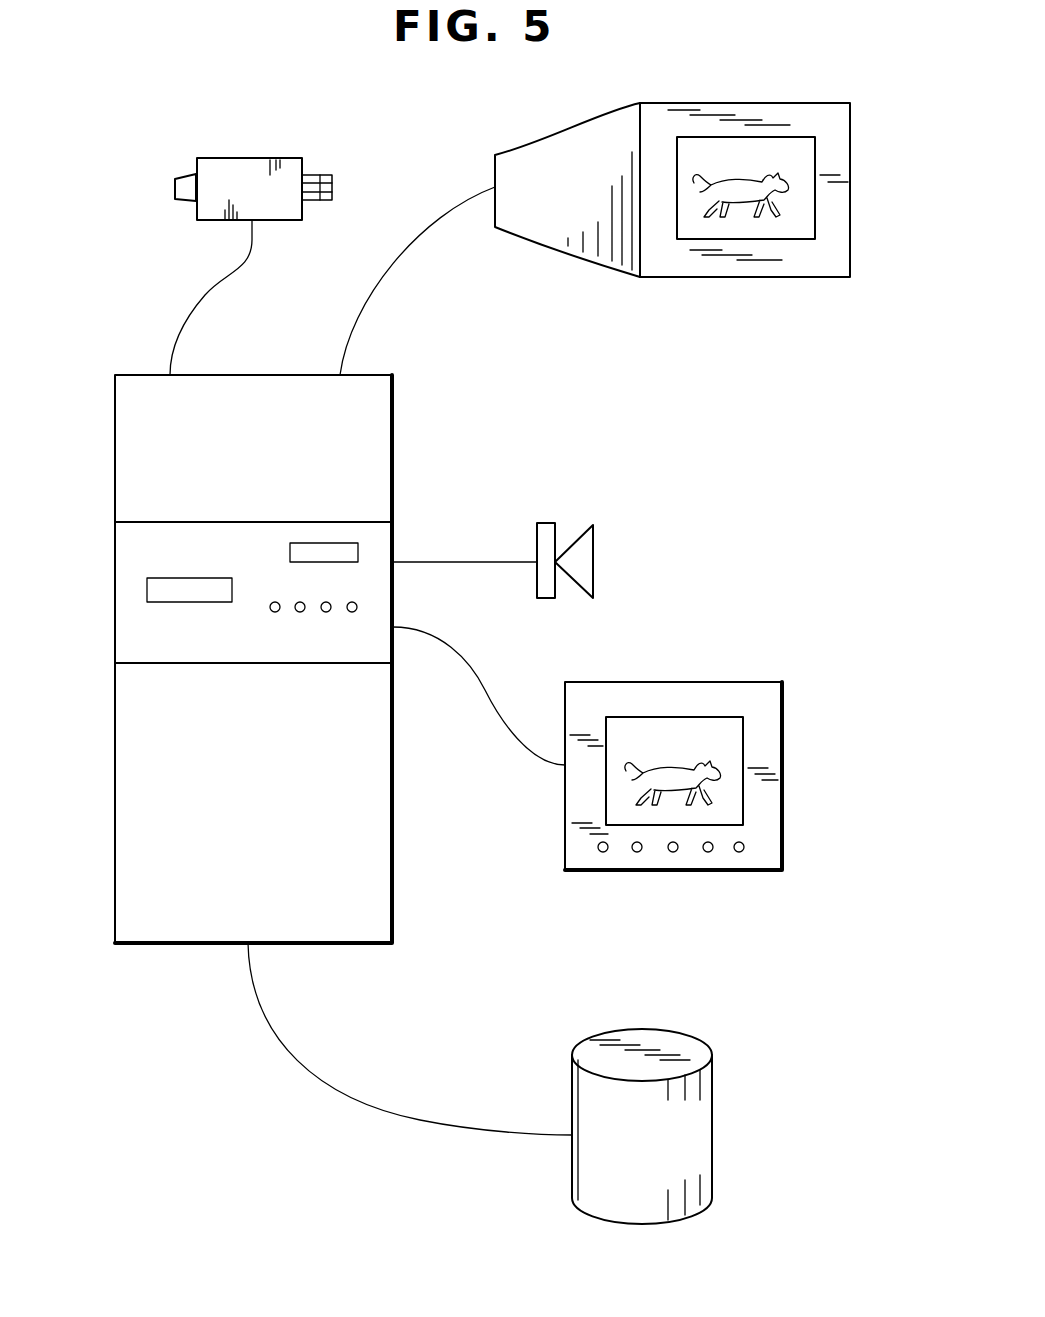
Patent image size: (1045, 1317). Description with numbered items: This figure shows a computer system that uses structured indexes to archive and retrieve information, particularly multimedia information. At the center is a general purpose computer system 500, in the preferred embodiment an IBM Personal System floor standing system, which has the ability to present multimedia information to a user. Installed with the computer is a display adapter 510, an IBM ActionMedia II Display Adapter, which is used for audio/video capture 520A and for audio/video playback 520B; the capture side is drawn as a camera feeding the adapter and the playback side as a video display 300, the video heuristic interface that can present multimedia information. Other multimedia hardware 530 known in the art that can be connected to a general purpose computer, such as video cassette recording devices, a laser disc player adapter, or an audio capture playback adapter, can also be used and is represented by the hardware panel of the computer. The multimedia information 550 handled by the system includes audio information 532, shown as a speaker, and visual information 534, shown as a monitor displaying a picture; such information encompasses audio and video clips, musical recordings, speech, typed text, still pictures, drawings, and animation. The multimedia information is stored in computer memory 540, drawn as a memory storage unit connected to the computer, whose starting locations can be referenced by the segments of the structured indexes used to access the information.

The general purpose computer system 500 is at (388, 823).
The display adapter 510 is at (385, 491).
The multimedia hardware 530 is at (125, 632).
The audio/video capture 520A is at (280, 162).
The audio/video playback 520B is at (852, 242).
The multimedia information 550 is at (700, 205).
The video display 300 is at (797, 158).
The audio information 532 is at (595, 538).
The visual information 534 is at (690, 737).
The computer memory 540 is at (705, 1143).